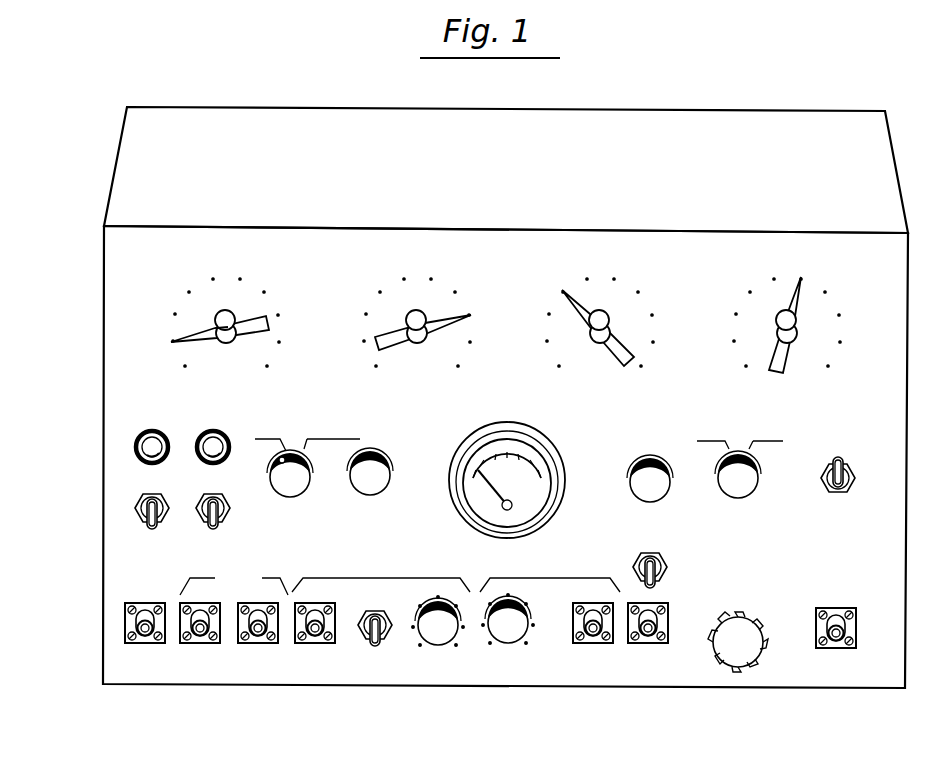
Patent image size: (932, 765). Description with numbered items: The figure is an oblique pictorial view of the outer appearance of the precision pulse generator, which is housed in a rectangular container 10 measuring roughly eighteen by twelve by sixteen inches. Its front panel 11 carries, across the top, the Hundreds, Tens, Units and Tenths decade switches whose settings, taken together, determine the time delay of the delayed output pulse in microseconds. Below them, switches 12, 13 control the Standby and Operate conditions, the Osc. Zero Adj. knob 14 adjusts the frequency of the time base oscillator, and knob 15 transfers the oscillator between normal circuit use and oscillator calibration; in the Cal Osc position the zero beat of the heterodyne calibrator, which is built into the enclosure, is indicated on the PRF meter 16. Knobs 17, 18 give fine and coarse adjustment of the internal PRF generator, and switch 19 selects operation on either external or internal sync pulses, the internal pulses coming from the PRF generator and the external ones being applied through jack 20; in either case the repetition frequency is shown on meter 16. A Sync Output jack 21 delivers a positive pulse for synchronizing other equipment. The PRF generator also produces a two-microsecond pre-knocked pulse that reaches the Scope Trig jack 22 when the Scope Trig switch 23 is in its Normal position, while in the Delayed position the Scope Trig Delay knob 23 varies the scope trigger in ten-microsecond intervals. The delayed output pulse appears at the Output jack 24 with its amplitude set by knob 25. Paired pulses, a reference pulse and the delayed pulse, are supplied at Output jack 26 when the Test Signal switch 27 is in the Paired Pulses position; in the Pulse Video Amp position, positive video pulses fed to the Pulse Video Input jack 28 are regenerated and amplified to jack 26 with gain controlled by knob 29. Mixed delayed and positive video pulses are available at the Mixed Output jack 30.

The container 10 is at (791, 116).
The front panel 11 is at (103, 268).
The standby switch 12 is at (143, 524).
The operate switch 13 is at (222, 521).
The Osc. Zero Adj. knob 14 is at (384, 486).
The Use/Cal Osc knob 15 is at (292, 497).
The PRF meter 16 is at (553, 484).
The Fine PRF knob 17 is at (631, 490).
The Coarse PRF knob 18 is at (720, 492).
The sync switch 19 is at (655, 583).
The sync input jack 20 is at (656, 622).
The Sync Output jack 21 is at (146, 612).
The Scope Trig jack 22 is at (844, 626).
The Scope Trig switch and Scope Trig Delay knob 23 is at (847, 468).
The Output jack 24 is at (594, 612).
The amplitude knob 25 is at (520, 634).
The test signal Output jack 26 is at (315, 612).
The Test Signal switch 27 is at (385, 613).
The Pulse Video Input jack 28 is at (200, 612).
The amplitude knob 29 is at (450, 636).
The Mixed Output jack 30 is at (259, 612).